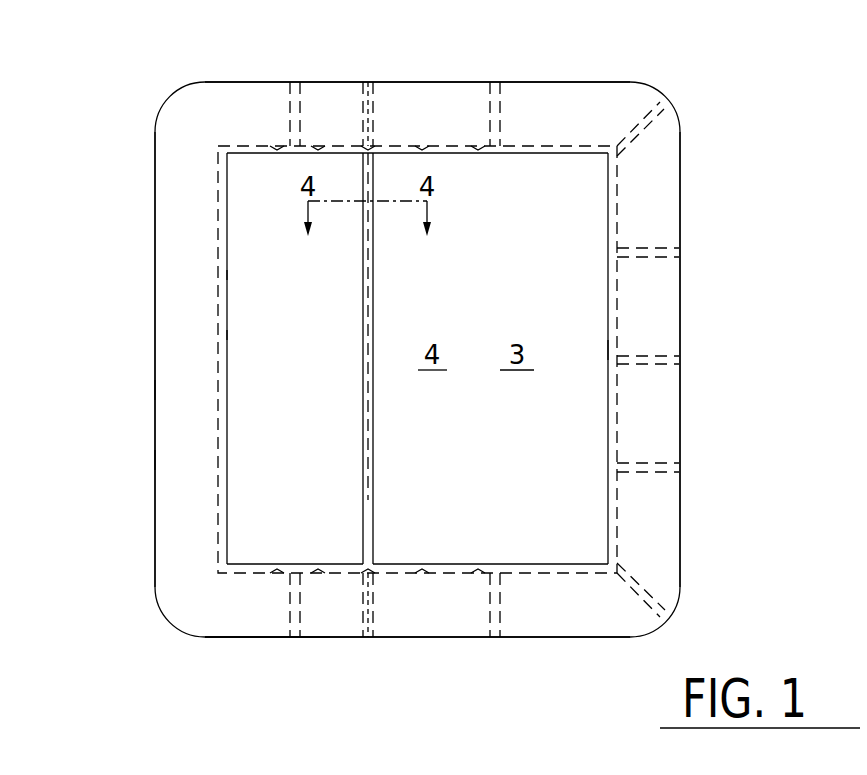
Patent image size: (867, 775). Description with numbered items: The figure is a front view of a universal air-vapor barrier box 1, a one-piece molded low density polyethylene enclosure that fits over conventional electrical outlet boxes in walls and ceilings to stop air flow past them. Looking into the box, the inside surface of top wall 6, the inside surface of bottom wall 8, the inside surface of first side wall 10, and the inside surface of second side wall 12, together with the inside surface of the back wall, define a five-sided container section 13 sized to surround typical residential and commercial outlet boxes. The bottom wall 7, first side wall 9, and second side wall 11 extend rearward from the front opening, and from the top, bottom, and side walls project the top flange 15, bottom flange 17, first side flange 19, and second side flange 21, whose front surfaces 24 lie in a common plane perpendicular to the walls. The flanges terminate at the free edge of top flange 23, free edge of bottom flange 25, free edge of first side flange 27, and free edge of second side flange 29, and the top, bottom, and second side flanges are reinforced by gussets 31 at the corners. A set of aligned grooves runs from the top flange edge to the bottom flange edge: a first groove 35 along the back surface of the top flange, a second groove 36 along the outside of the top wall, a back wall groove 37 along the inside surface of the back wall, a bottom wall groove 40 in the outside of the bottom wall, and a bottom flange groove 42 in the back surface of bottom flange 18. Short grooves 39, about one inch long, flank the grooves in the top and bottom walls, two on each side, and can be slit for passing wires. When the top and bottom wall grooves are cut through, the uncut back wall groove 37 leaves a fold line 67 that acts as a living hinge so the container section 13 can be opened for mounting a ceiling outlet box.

The universal air-vapor barrier box 1 is at (690, 338).
The inside surface of top wall 6 is at (492, 153).
The bottom wall 7 is at (422, 565).
The inside surface of bottom wall 8 is at (258, 565).
The first side wall 9 is at (228, 370).
The inside surface of first side wall 10 is at (227, 313).
The second side wall 11 is at (608, 507).
The inside surface of second side wall 12 is at (608, 297).
The container section 13 is at (238, 250).
The top flange 15 is at (548, 103).
The bottom flange 17 is at (557, 613).
The back surface of bottom flange 18 is at (437, 610).
The first side flange 19 is at (170, 353).
The second side flange 21 is at (657, 317).
The free edge of top flange 23 is at (462, 82).
The front surfaces of flanges 24 is at (172, 507).
The free edge of bottom flange 25 is at (247, 638).
The free edge of first side flange 27 is at (155, 430).
The free edge of second side flange 29 is at (680, 428).
The gussets 31 is at (498, 607).
The first groove 35 is at (373, 112).
The second groove 36 is at (366, 143).
The back wall groove 37 is at (373, 437).
The short grooves 39 is at (277, 142).
The bottom wall groove 40 is at (375, 610).
The bottom flange groove 42 is at (362, 606).
The fold line 67 is at (368, 288).